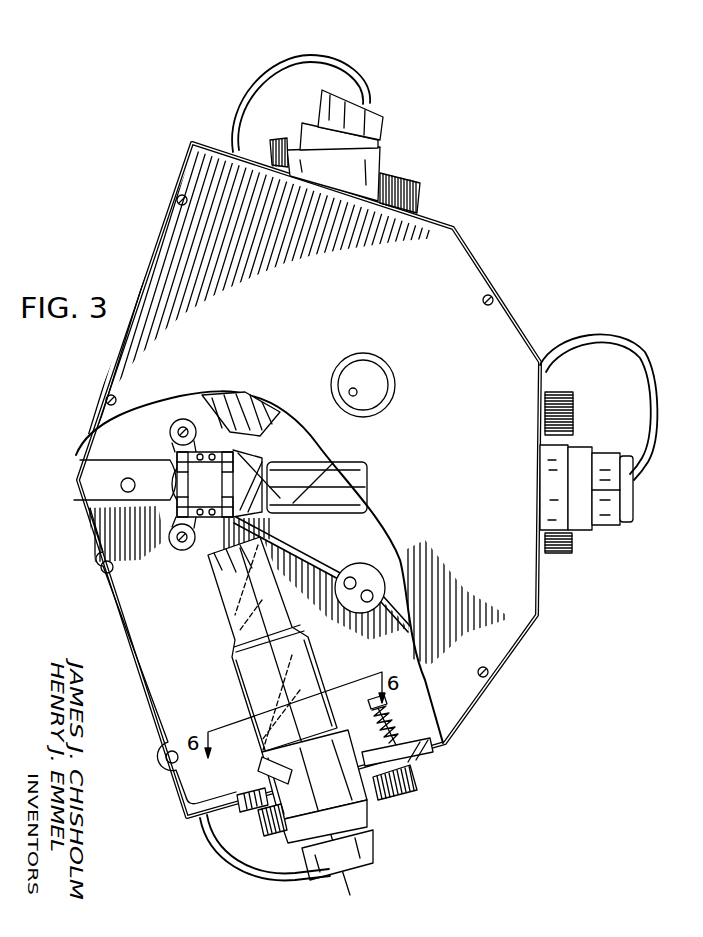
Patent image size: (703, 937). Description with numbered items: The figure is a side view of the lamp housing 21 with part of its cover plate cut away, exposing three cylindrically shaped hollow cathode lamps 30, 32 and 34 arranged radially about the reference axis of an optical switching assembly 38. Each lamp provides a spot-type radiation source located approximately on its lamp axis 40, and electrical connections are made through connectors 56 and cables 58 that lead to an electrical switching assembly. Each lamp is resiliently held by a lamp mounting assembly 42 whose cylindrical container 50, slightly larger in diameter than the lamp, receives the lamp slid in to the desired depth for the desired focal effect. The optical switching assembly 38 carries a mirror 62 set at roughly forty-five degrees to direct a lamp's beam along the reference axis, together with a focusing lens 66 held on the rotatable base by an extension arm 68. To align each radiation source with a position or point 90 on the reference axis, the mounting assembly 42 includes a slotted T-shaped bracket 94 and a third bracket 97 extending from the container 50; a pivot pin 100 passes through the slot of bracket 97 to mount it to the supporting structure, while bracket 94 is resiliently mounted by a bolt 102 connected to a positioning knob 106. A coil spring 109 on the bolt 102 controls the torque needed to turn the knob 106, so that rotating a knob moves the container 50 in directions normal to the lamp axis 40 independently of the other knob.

The lamp housing 21 is at (460, 268).
The hollow cathode lamp 30 is at (233, 662).
The hollow cathode lamp 32 is at (353, 500).
The hollow cathode lamp 34 is at (250, 412).
The optical switching assembly 38 is at (172, 490).
The lamp axis 40 is at (220, 432).
The lamp mounting assembly 42 is at (360, 178).
The cylindrical container 50 is at (317, 753).
The connector 56 is at (383, 118).
The cable 58 is at (350, 72).
The mirror 62 is at (187, 478).
The focusing lens 66 is at (262, 458).
The extension arm 68 is at (273, 526).
The position or point on the reference axis 90 is at (175, 516).
The T-shaped bracket 94 is at (428, 752).
The bracket 97 is at (232, 797).
The pivot pin 100 is at (252, 790).
The bolt 102 is at (385, 706).
The positioning knob 106 is at (272, 140).
The coil spring 109 is at (377, 730).